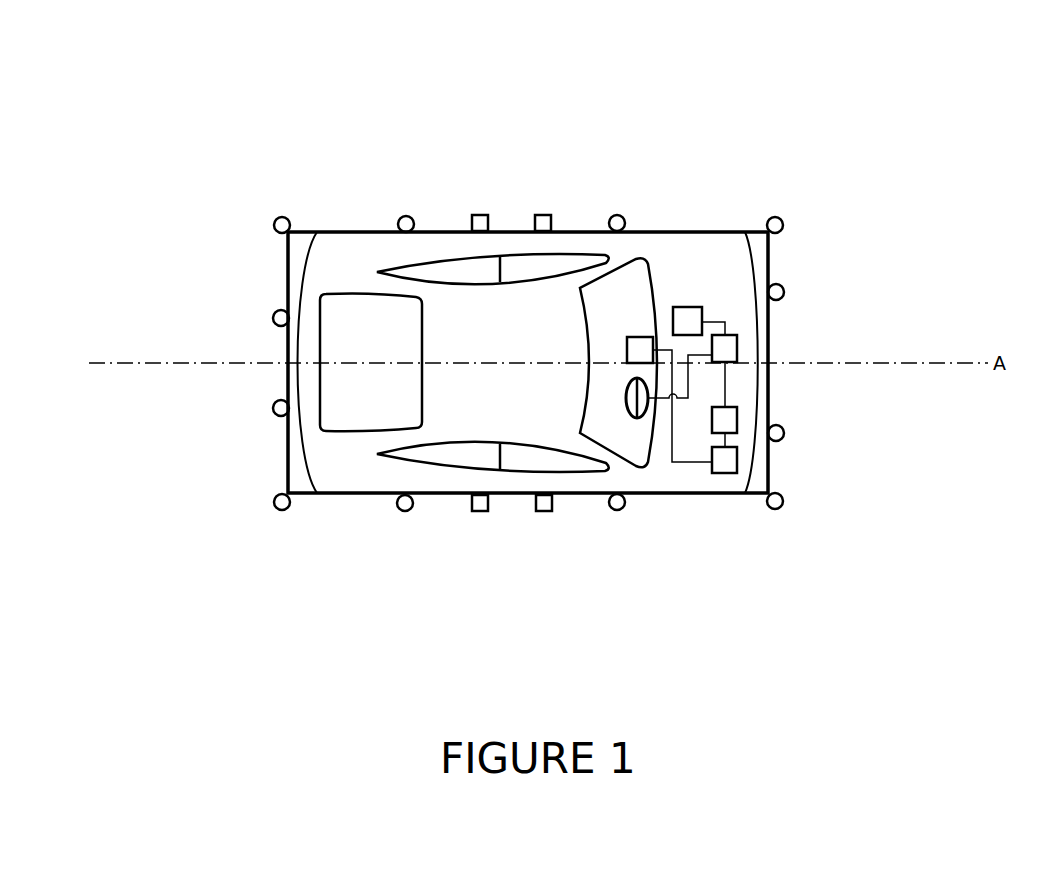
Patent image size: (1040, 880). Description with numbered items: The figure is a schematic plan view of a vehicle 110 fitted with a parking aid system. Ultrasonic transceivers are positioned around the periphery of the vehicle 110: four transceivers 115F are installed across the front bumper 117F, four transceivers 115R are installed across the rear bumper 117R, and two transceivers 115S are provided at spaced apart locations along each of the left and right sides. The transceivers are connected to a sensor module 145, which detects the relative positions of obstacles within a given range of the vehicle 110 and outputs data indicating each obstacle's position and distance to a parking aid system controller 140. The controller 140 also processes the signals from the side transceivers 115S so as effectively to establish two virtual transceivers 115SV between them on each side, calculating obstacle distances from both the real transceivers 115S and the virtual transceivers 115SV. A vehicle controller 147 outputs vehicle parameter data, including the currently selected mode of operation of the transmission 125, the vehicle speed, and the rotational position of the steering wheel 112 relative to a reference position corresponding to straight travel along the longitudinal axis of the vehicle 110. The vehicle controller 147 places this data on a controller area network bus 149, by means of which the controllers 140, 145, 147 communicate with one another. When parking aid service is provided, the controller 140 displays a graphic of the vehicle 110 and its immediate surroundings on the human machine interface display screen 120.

The vehicle 110 is at (722, 120).
The steering wheel 112 is at (637, 418).
The rear transceivers 115R is at (274, 221).
The side transceivers 115S is at (400, 217).
The virtual transceivers 115SV is at (478, 213).
The front transceivers 115F is at (783, 218).
The rear bumper 117R is at (302, 445).
The front bumper 117F is at (760, 260).
The human machine interface display screen 120 is at (645, 337).
The transmission 125 is at (690, 307).
The parking aid system controller 140 is at (731, 412).
The sensor module 145 is at (732, 458).
The vehicle controller 147 is at (735, 345).
The controller area network bus 149 is at (690, 462).